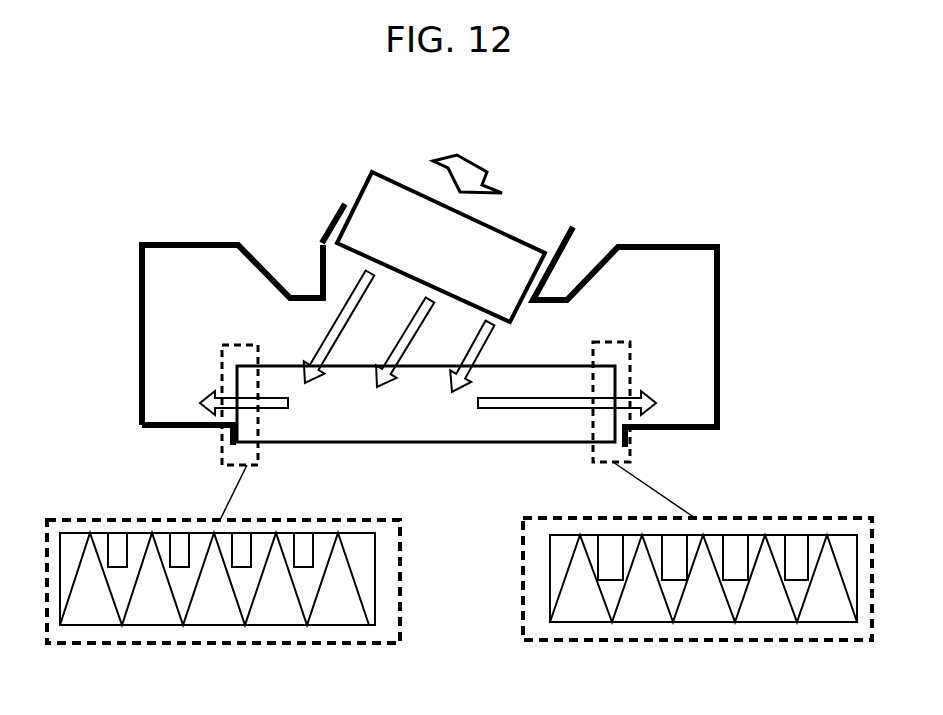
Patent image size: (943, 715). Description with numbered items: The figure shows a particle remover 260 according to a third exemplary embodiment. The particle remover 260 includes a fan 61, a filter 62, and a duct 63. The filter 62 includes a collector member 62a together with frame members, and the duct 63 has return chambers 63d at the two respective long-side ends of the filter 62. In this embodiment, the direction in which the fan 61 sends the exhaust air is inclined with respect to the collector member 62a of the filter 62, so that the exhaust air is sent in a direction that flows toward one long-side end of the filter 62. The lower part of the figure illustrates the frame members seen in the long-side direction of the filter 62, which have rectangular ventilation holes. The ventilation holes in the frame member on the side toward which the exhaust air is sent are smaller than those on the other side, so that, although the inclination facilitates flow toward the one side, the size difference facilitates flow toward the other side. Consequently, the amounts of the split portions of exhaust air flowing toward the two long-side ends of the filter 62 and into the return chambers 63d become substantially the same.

The particle remover 260 is at (256, 174).
The fan 61 is at (377, 190).
The filter 62 is at (417, 456).
The collector member 62a is at (380, 445).
The duct 63 is at (586, 264).
The return chambers 63d is at (142, 295).